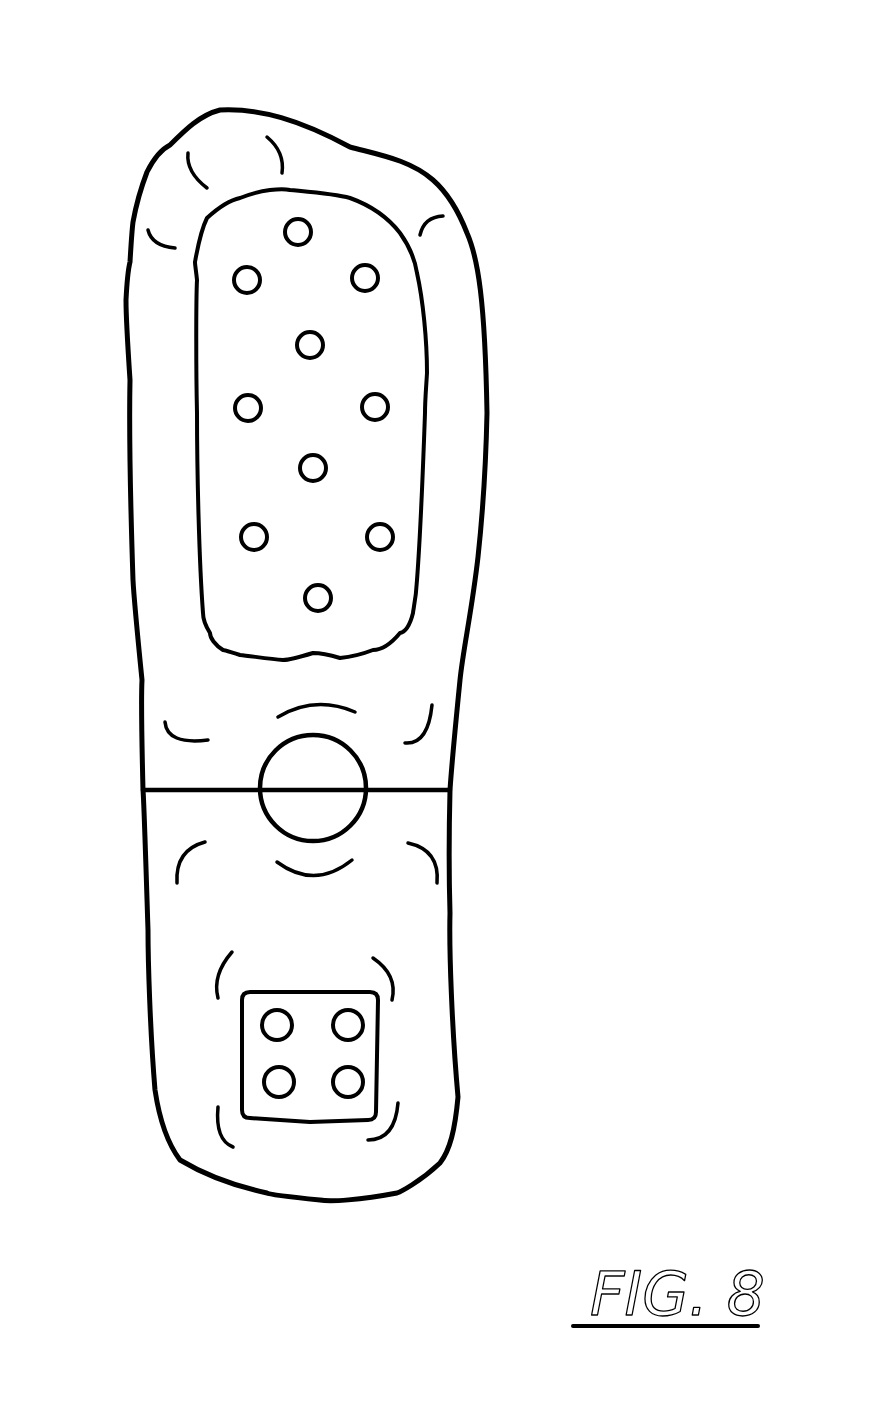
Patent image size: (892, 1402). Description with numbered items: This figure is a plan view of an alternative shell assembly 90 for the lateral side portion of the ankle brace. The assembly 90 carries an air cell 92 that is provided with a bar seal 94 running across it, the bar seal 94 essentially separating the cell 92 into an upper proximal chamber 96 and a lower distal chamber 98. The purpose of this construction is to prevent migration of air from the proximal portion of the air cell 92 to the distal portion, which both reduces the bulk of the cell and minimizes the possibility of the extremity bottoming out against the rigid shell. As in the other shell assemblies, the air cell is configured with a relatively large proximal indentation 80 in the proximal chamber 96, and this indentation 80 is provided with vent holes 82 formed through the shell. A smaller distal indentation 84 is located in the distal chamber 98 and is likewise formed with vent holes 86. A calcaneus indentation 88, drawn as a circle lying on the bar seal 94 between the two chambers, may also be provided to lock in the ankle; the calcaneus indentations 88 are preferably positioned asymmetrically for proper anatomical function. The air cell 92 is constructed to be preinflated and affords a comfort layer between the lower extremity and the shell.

The proximal indentation 80 is at (227, 232).
The vent holes 82 is at (365, 278).
The distal indentation 84 is at (253, 1055).
The vent holes 86 is at (347, 1085).
The calcaneus indentation 88 is at (283, 772).
The alternative shell assembly 90 is at (513, 142).
The air cell 92 is at (483, 527).
The bar seal 94 is at (413, 785).
The proximal chamber 96 is at (463, 373).
The distal chamber 98 is at (420, 933).